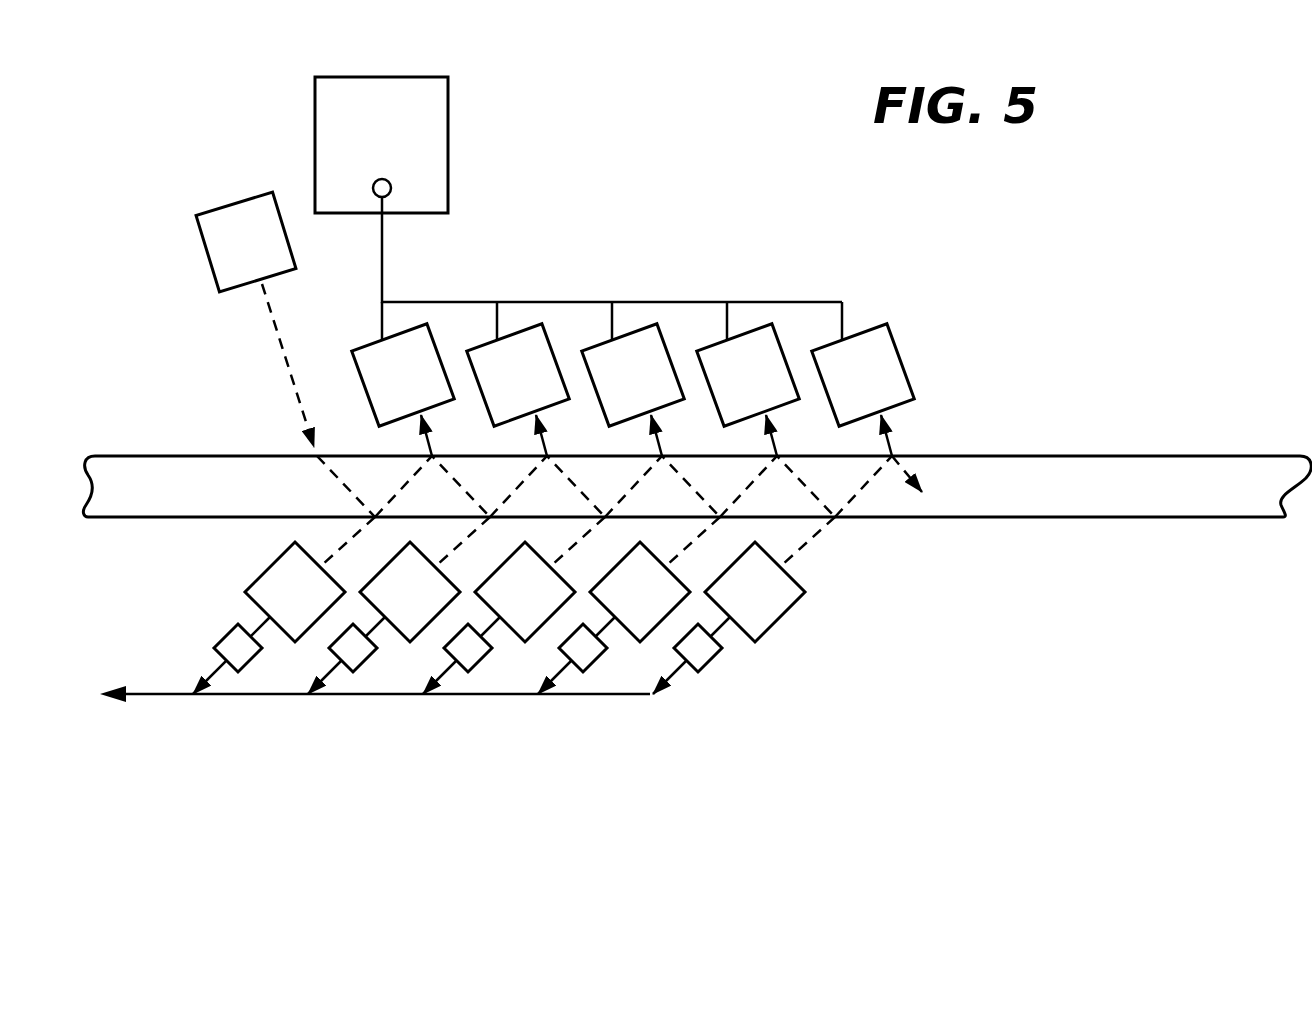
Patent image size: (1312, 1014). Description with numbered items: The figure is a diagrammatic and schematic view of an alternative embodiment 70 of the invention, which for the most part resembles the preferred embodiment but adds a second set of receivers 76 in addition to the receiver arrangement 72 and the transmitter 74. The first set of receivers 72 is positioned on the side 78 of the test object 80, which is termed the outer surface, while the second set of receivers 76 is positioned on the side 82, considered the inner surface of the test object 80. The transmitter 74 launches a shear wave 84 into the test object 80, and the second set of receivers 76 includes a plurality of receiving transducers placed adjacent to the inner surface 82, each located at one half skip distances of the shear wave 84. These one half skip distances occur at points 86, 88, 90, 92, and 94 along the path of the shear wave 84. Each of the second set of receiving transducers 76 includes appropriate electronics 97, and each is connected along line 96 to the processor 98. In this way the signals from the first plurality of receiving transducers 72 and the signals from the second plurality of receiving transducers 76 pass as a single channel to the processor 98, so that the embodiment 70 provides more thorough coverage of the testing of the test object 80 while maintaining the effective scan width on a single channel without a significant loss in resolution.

The embodiment 70 is at (1060, 292).
The receiver arrangement 72 is at (362, 341).
The transmitter 74 is at (202, 261).
The second set of receivers 76 is at (780, 615).
The side 78 is at (990, 457).
The test object 80 is at (1150, 478).
The side 82 is at (1005, 518).
The shear wave 84 is at (345, 490).
The point 86 is at (378, 519).
The point 88 is at (493, 519).
The point 90 is at (608, 519).
The point 92 is at (723, 519).
The point 94 is at (835, 520).
The line 96 is at (565, 694).
The electronics 97 is at (218, 640).
The processor 98 is at (450, 130).